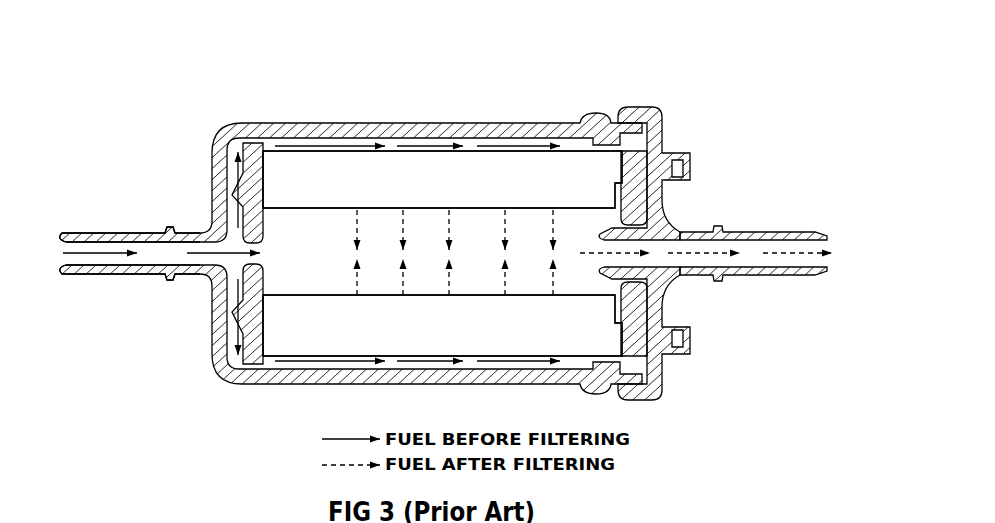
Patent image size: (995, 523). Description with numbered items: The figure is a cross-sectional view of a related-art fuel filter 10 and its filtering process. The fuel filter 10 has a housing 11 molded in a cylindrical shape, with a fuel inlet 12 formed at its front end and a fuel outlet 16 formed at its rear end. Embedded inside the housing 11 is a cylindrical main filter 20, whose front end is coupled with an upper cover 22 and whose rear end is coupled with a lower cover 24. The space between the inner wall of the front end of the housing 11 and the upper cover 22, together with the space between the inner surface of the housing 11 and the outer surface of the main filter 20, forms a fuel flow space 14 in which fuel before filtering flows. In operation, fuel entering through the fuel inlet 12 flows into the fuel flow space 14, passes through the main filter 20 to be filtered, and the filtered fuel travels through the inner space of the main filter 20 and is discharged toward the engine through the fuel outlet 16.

The fuel filter 10 is at (415, 103).
The housing 11 is at (466, 123).
The fuel inlet 12 is at (153, 253).
The fuel flow space 14 is at (280, 143).
The fuel outlet 16 is at (753, 253).
The main filter 20 is at (303, 160).
The upper cover 22 is at (253, 143).
The lower cover 24 is at (627, 200).